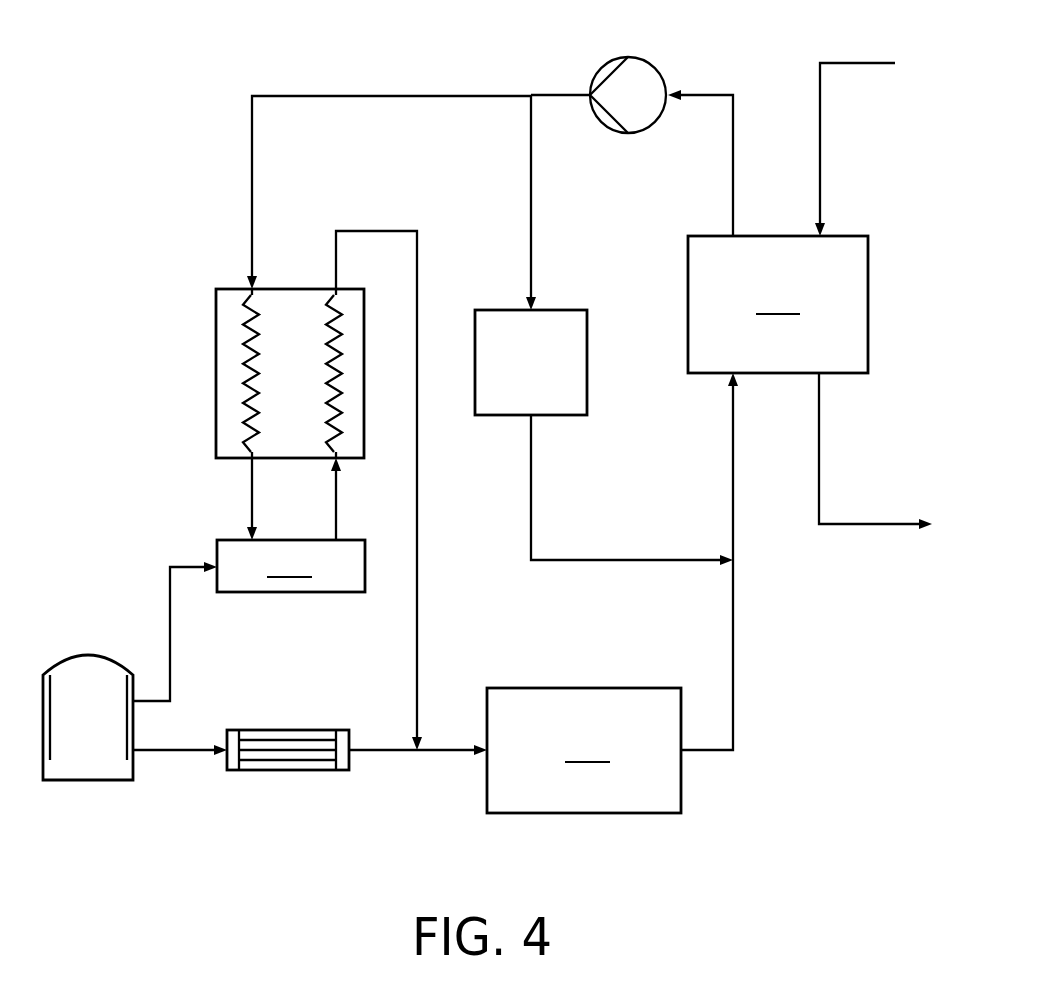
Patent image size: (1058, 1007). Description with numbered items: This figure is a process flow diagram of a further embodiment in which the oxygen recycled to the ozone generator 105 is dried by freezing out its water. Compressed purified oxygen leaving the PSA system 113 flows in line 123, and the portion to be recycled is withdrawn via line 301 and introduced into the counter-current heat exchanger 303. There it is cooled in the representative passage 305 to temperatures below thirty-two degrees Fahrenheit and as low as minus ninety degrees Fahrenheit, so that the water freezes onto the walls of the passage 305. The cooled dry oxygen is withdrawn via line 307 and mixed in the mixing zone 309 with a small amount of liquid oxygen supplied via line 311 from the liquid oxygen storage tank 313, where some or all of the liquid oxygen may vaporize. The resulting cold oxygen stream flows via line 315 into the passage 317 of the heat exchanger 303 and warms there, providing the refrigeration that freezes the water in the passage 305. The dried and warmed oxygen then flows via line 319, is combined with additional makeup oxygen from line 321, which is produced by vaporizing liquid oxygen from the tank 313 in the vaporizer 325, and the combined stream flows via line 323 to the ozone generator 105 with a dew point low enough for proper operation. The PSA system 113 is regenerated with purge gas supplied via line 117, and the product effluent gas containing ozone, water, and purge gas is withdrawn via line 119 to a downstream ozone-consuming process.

The ozone generator 105 is at (584, 750).
The PSA system 113 is at (778, 304).
The purge gas line 117 is at (820, 180).
The product effluent gas line 119 is at (820, 458).
The compressed oxygen line 123 is at (549, 95).
The recycle oxygen line 301 is at (351, 96).
The counter-current heat exchanger 303 is at (216, 318).
The passage 305 is at (242, 405).
The cooled dry oxygen line 307 is at (252, 507).
The mixing zone 309 is at (291, 566).
The liquid oxygen line 311 is at (170, 627).
The liquid oxygen storage tank 313 is at (117, 780).
The cold oxygen line 315 is at (336, 522).
The passage 317 is at (333, 345).
The dried and warmed oxygen line 319 is at (417, 600).
The additional oxygen line 321 is at (375, 750).
The combined oxygen stream line 323 is at (445, 750).
The vaporizer 325 is at (307, 730).